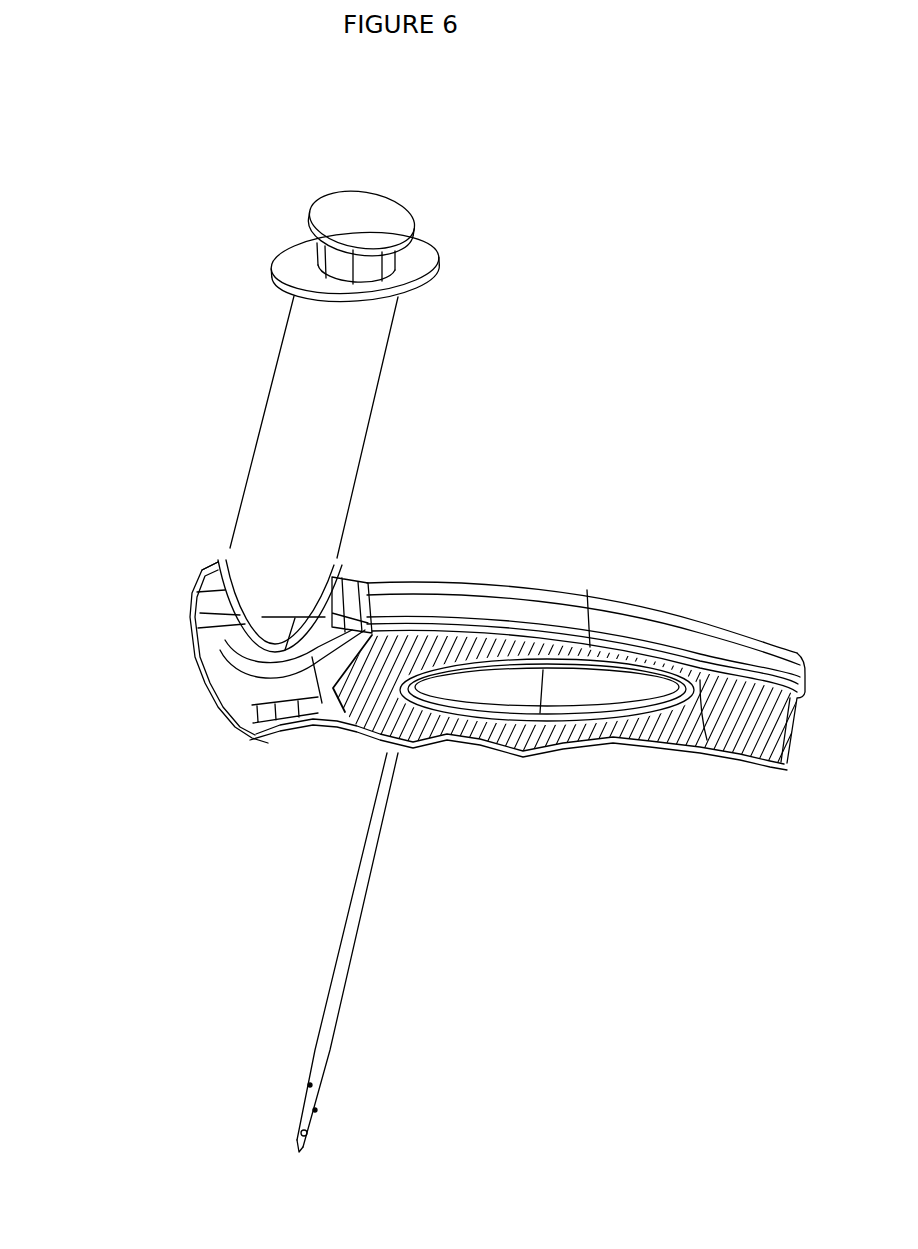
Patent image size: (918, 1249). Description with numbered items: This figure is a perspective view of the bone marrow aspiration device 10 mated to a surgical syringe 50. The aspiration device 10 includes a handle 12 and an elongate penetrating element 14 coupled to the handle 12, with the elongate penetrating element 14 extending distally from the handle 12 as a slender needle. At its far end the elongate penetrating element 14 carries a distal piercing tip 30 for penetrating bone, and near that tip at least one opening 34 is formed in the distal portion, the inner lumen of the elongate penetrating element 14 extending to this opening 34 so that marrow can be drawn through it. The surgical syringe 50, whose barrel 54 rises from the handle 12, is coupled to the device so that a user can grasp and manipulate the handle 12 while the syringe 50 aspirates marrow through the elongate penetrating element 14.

The bone marrow aspiration device 10 is at (112, 580).
The handle 12 is at (252, 688).
The elongate penetrating element 14 is at (352, 910).
The distal piercing tip 30 is at (300, 1150).
The opening 34 is at (307, 1133).
The surgical syringe 50 is at (153, 290).
The syringe barrel 54 is at (292, 432).